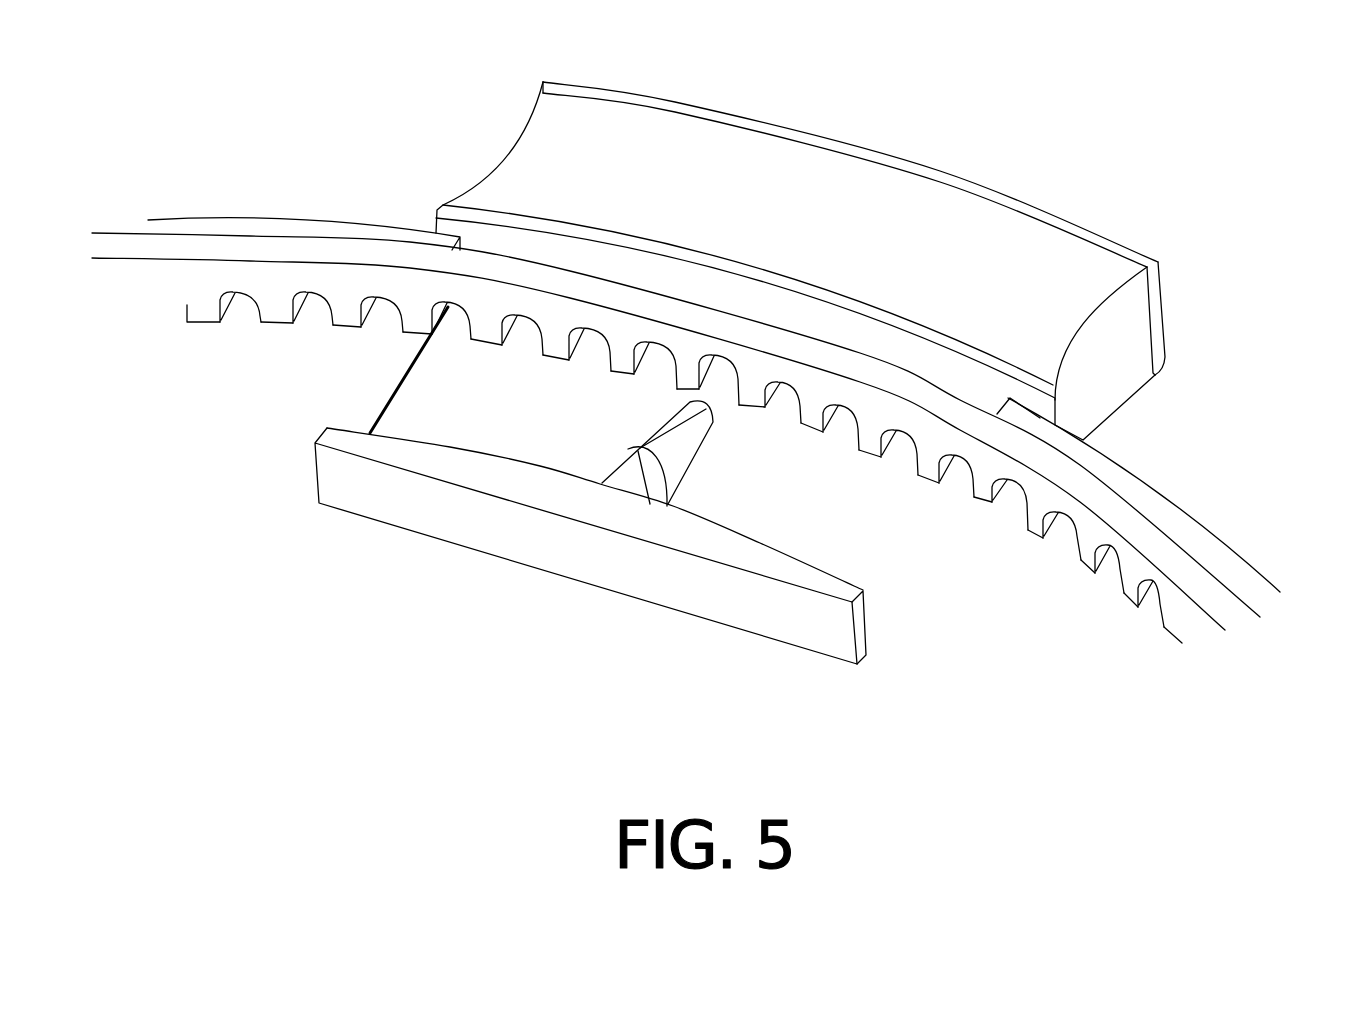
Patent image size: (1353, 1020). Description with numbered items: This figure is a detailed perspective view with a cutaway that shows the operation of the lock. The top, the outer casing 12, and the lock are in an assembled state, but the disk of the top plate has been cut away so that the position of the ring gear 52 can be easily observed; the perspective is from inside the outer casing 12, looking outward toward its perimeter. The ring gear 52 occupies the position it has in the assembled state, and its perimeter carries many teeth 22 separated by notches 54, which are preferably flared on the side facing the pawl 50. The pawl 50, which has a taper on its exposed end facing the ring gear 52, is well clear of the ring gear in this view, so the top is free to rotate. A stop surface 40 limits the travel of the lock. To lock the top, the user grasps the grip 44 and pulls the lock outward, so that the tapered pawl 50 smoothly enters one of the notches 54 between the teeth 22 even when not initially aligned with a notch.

The outer casing 12 is at (1202, 545).
The tooth 22 is at (1032, 533).
The stop surface 40 is at (278, 287).
The grip 44 is at (1048, 250).
The pawl 50 is at (682, 465).
The ring gear 52 is at (395, 256).
The notch 54 is at (1044, 539).